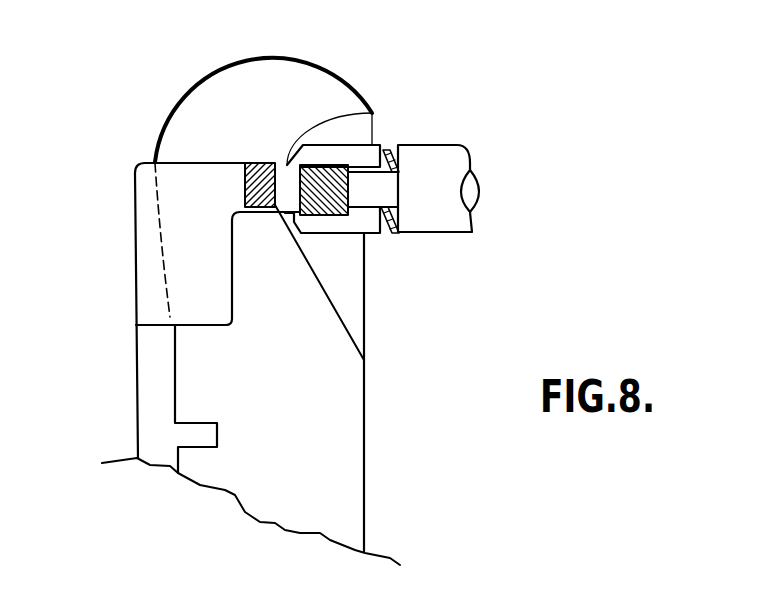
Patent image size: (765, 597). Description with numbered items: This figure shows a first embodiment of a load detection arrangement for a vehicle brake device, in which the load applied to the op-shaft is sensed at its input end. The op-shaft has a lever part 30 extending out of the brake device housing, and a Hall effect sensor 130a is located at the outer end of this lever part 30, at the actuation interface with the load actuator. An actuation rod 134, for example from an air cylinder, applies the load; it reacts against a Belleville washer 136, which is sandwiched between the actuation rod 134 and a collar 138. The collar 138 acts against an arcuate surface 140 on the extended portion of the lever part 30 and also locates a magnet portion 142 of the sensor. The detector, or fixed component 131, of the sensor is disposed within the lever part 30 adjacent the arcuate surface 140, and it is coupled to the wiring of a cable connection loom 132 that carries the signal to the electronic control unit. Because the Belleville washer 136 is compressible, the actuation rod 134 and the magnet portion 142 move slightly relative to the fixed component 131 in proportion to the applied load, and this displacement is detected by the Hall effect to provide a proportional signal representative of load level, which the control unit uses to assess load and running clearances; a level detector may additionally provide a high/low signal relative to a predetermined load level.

The lever part 30 is at (350, 475).
The Hall effect sensor 130a is at (277, 140).
The fixed component 131 is at (253, 160).
The cable connection loom 132 is at (145, 338).
The actuation rod 134 is at (442, 155).
The Belleville washer 136 is at (388, 232).
The collar 138 is at (375, 150).
The arcuate surface 140 is at (286, 216).
The magnet portion 142 is at (340, 220).